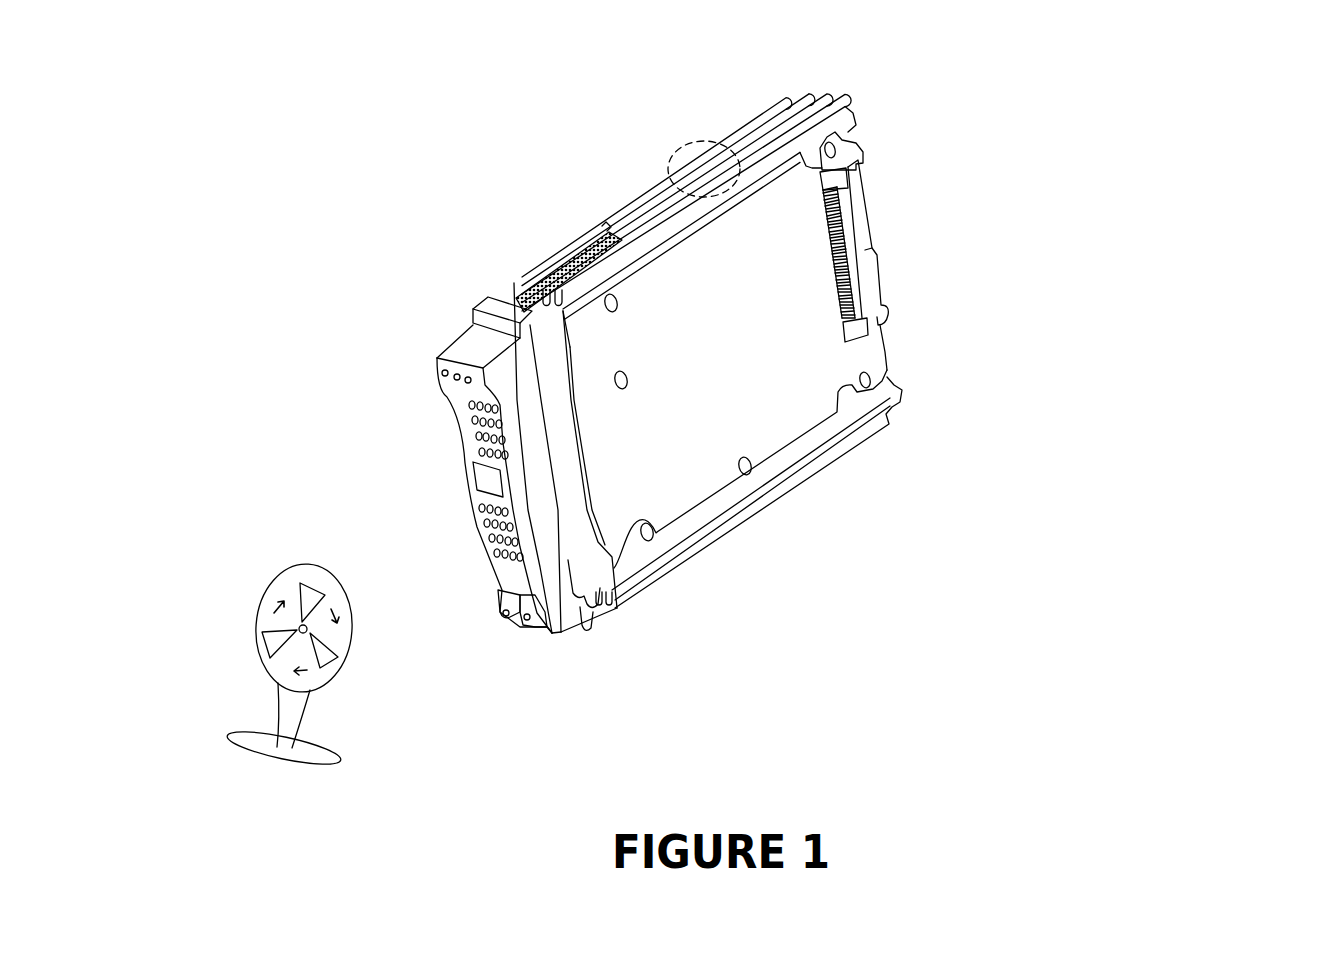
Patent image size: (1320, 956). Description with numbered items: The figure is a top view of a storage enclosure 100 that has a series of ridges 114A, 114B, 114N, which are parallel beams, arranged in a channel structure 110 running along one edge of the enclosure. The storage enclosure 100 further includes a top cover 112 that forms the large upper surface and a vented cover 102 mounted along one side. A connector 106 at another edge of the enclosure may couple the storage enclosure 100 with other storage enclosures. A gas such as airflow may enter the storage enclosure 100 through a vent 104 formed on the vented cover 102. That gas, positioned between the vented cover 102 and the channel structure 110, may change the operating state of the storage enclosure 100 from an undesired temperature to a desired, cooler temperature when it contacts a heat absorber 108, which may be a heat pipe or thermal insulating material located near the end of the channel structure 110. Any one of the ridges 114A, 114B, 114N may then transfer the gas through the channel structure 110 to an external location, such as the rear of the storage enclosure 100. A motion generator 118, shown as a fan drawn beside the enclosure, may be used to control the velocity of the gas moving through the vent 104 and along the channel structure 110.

The storage enclosure 100 is at (701, 409).
The vented cover 102 is at (362, 465).
The vent 104 is at (470, 497).
The connector 106 is at (855, 220).
The heat absorber 108 is at (520, 292).
The channel structure 110 is at (670, 165).
The top cover 112 is at (845, 358).
The ridge 114A is at (785, 92).
The ridge 114B is at (812, 96).
The ridge 114N is at (848, 108).
The motion generator 118 is at (288, 715).